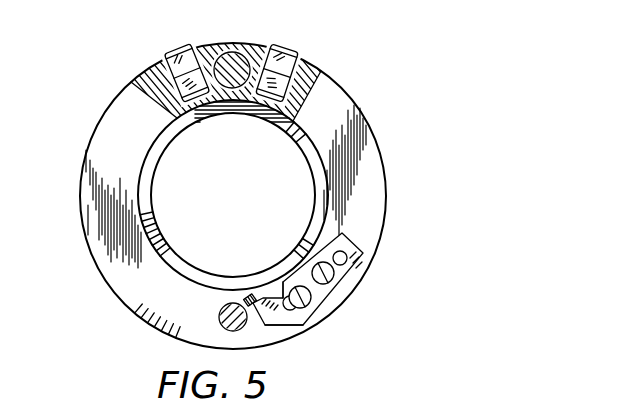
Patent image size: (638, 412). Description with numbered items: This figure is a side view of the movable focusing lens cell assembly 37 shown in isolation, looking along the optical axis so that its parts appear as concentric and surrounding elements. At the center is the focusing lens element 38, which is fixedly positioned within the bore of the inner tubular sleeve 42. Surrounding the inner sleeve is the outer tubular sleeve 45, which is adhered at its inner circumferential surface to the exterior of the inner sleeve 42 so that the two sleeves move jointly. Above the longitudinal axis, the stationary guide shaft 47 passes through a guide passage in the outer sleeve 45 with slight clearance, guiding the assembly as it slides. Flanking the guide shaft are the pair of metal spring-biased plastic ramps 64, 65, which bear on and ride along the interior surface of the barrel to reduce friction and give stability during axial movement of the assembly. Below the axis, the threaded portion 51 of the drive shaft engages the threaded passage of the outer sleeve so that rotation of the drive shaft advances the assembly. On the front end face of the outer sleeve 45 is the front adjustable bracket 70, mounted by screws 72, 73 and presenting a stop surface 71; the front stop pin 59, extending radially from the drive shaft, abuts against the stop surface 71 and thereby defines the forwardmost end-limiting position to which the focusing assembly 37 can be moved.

The focusing lens cell assembly 37 is at (411, 176).
The focusing lens element 38 is at (248, 222).
The inner tubular sleeve 42 is at (307, 124).
The outer tubular sleeve 45 is at (367, 209).
The guide shaft 47 is at (254, 45).
The threaded portion 51 is at (220, 312).
The front stop pin 59 is at (247, 296).
The spring-biased plastic ramp 64 is at (284, 50).
The spring-biased plastic ramp 65 is at (185, 47).
The front adjustable bracket 70 is at (350, 255).
The stop surface 71 is at (270, 302).
The screw 72 is at (313, 310).
The screw 73 is at (327, 275).